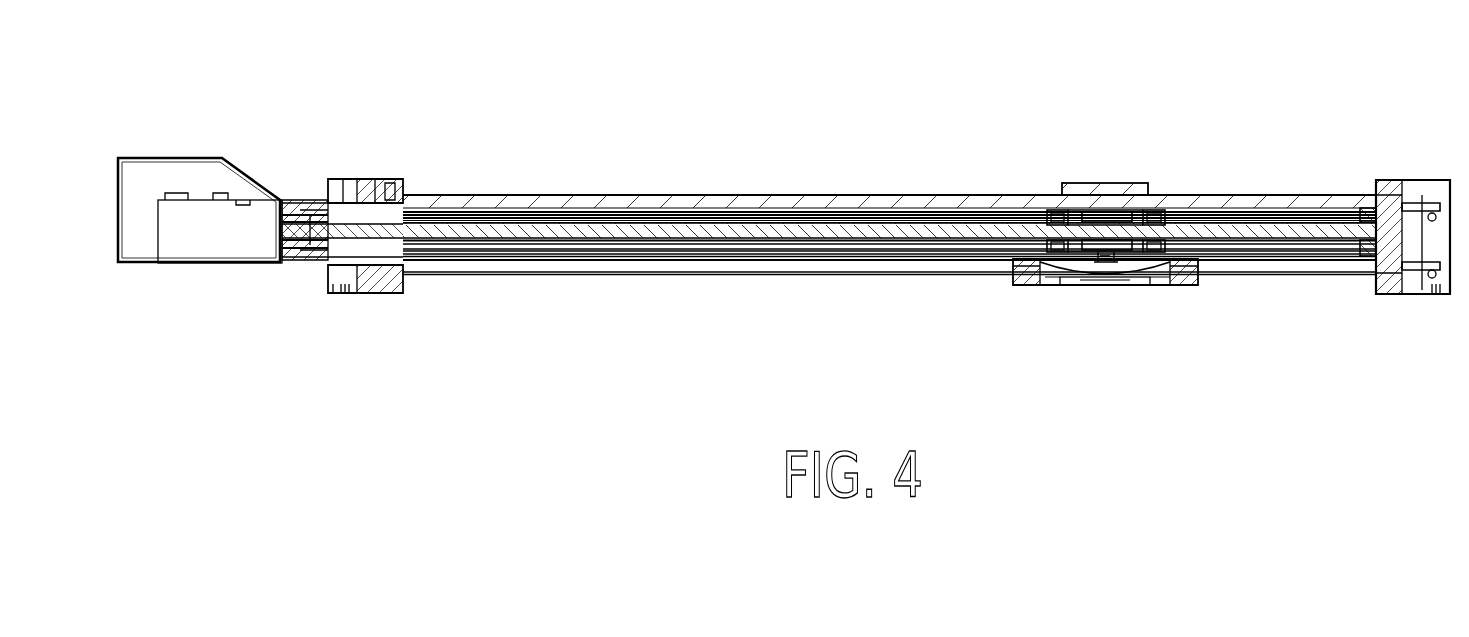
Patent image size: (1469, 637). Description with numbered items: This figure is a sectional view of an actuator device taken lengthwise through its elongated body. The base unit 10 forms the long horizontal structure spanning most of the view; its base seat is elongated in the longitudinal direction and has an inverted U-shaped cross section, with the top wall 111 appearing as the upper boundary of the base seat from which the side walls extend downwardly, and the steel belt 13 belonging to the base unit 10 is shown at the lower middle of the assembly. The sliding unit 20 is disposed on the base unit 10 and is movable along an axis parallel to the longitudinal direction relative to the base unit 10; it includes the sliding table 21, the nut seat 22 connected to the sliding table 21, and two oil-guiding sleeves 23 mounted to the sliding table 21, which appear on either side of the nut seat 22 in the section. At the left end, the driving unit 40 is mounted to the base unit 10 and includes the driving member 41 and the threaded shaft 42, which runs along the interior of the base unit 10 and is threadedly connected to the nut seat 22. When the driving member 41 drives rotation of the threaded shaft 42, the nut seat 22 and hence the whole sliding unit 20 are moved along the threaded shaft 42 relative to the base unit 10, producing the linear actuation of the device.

The base unit 10 is at (862, 180).
The top wall 111 is at (588, 194).
The steel belt 13 is at (1045, 262).
The sliding unit 20 is at (1128, 149).
The sliding table 21 is at (1132, 188).
The nut seat 22 is at (1097, 222).
The oil-guiding sleeve 23 is at (1055, 210).
The driving unit 40 is at (203, 200).
The driving member 41 is at (220, 231).
The threaded shaft 42 is at (768, 232).